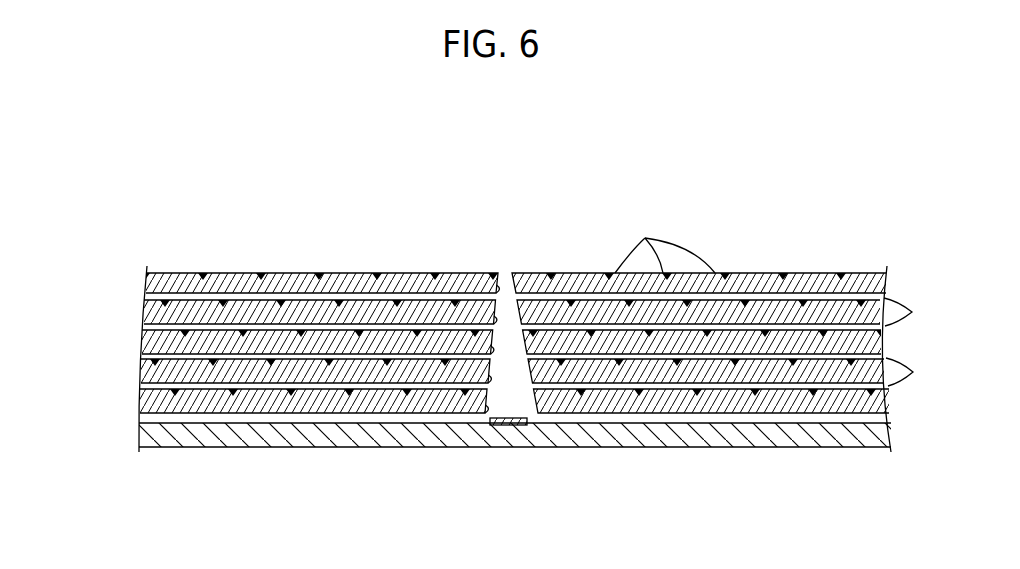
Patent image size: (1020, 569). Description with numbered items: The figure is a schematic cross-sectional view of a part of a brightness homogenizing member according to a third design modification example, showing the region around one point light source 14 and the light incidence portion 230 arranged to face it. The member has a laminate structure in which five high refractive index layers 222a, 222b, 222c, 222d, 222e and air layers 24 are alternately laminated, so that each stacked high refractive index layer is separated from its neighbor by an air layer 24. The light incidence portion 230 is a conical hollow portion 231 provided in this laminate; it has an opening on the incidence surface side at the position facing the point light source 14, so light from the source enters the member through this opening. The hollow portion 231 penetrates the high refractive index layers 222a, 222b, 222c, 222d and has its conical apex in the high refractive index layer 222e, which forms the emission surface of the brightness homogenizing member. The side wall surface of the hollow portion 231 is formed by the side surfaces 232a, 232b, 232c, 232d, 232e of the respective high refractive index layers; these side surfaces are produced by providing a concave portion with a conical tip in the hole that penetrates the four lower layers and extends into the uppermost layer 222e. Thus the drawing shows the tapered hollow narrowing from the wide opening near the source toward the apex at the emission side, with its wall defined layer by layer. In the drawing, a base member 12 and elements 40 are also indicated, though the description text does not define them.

The core substrate 12 is at (139, 437).
The point light source 14 is at (541, 426).
The air layer 24 is at (917, 343).
The inorganic filler 40 is at (665, 240).
The high refractive index layer 222a is at (140, 400).
The high refractive index layer 222b is at (141, 371).
The high refractive index layer 222c is at (142, 341).
The high refractive index layer 222d is at (144, 312).
The high refractive index layer 222e is at (146, 284).
The light incidence portion 230 is at (511, 268).
The hollow portion 231 is at (520, 400).
The side surface 232a is at (486, 405).
The side surface 232b is at (486, 381).
The side surface 232c is at (491, 349).
The side surface 232d is at (498, 318).
The side surface 232e is at (498, 287).